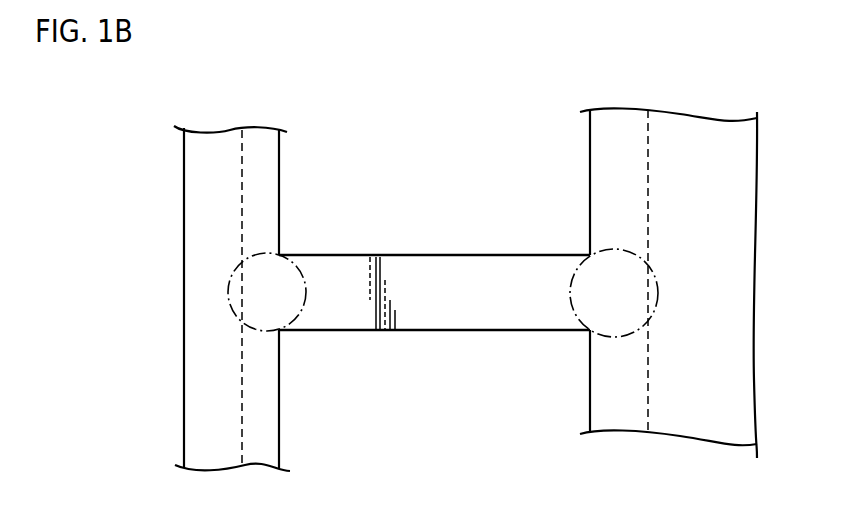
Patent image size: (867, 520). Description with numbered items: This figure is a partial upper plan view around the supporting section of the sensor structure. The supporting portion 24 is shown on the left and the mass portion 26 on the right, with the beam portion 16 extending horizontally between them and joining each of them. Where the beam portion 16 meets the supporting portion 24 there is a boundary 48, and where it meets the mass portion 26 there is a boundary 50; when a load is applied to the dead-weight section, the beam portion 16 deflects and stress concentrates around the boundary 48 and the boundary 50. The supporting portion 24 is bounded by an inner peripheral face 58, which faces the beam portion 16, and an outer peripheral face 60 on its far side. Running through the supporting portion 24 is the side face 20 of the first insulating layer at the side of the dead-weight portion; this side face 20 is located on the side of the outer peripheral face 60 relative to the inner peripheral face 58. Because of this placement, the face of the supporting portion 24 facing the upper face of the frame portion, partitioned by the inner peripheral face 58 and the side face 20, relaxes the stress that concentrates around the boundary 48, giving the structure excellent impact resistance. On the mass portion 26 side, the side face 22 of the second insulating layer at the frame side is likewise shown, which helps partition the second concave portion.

The beam portion 16 is at (460, 262).
The side face of the first insulating layer 20 is at (244, 160).
The side face of the second insulating layer 22 is at (648, 392).
The supporting portion 24 is at (198, 412).
The mass portion 26 is at (626, 118).
The boundary between the beam portion and the supporting portion 48 is at (318, 258).
The boundary between the beam portion and the mass portion 50 is at (580, 265).
The inner peripheral face of the supporting portion 58 is at (279, 165).
The outer peripheral face of the supporting portion 60 is at (184, 217).